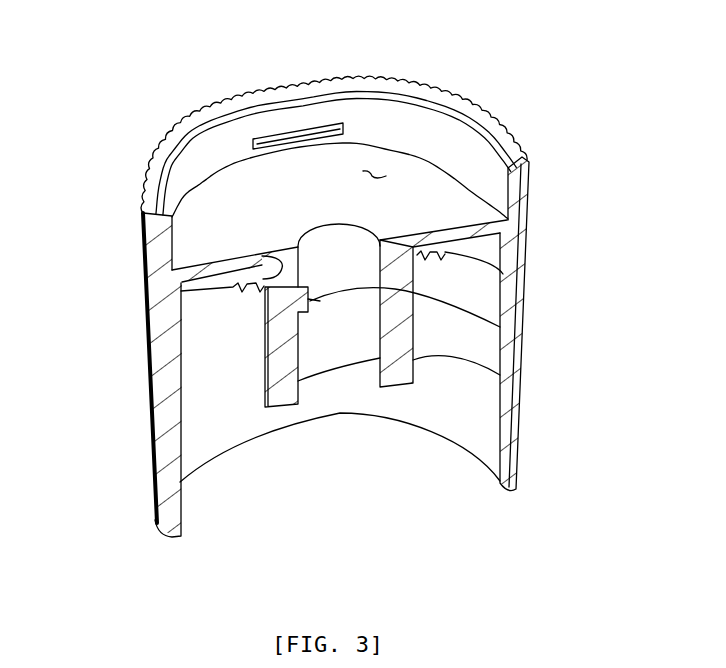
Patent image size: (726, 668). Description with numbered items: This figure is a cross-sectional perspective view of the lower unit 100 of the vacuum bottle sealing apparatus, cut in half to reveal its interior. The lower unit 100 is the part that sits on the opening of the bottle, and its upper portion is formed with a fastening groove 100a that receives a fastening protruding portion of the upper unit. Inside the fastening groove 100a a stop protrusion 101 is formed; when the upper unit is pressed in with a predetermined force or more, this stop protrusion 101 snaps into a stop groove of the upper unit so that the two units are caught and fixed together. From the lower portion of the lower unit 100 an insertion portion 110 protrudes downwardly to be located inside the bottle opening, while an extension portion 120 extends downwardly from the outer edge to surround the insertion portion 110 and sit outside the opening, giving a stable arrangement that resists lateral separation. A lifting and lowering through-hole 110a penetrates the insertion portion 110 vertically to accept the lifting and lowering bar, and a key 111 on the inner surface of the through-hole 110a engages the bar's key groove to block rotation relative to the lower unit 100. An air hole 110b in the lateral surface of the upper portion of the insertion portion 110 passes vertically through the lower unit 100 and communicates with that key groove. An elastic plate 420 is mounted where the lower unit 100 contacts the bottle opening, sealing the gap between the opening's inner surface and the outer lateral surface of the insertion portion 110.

The lower unit 100 is at (118, 215).
The stop protrusion 101 is at (302, 124).
The fastening groove 100a is at (372, 172).
The insertion portion 110 is at (500, 375).
The lifting and lowering through-hole 110a is at (344, 342).
The air hole 110b is at (283, 255).
The key 111 is at (500, 326).
The extension portion 120 is at (183, 500).
The elastic plate 420 is at (503, 274).